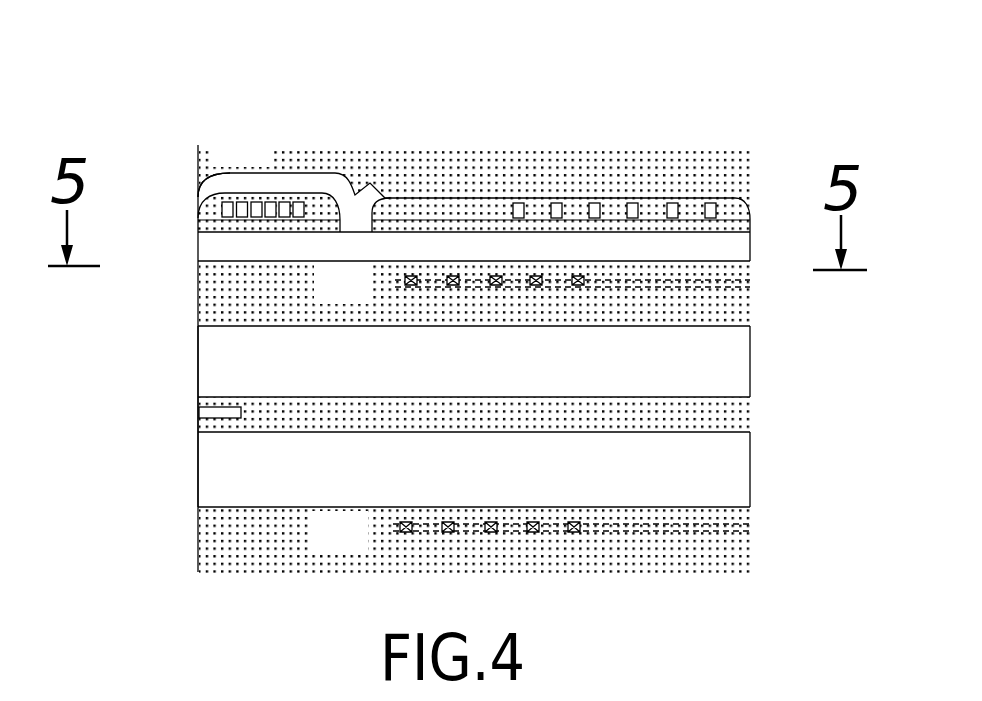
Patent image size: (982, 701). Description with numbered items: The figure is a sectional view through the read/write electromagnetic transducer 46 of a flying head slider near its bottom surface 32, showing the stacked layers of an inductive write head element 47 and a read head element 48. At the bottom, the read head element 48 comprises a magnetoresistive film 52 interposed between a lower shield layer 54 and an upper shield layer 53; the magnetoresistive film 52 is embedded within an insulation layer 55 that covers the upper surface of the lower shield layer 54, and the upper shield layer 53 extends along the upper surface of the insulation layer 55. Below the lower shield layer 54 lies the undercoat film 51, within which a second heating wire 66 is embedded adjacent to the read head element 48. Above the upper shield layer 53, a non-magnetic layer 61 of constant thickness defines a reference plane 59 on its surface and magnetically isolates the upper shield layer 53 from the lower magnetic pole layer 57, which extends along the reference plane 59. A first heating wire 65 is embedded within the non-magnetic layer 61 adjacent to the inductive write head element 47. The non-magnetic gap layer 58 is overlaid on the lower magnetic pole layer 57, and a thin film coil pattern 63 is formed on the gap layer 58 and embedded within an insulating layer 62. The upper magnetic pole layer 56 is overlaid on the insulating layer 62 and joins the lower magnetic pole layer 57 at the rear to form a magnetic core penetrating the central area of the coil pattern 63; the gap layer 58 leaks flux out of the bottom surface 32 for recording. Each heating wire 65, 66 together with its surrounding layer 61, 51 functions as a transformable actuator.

The bottom surface 32 is at (197, 555).
The read/write electromagnetic transducer 46 is at (316, 146).
The inductive write head element 47 is at (221, 160).
The read head element 48 is at (197, 483).
The undercoat film 51 is at (747, 508).
The magnetoresistive film 52 is at (198, 413).
The upper shield layer 53 is at (199, 383).
The lower shield layer 54 is at (199, 452).
The insulation layer 55 is at (747, 397).
The upper magnetic pole layer 56 is at (278, 178).
The lower magnetic pole layer 57 is at (201, 254).
The non-magnetic gap layer 58 is at (199, 225).
The reference plane 59 is at (748, 262).
The non-magnetic layer 61 is at (200, 323).
The insulating layer 62 is at (205, 204).
The thin film coil pattern 63 is at (225, 208).
The first heating wire 65 is at (402, 281).
The second heating wire 66 is at (398, 527).